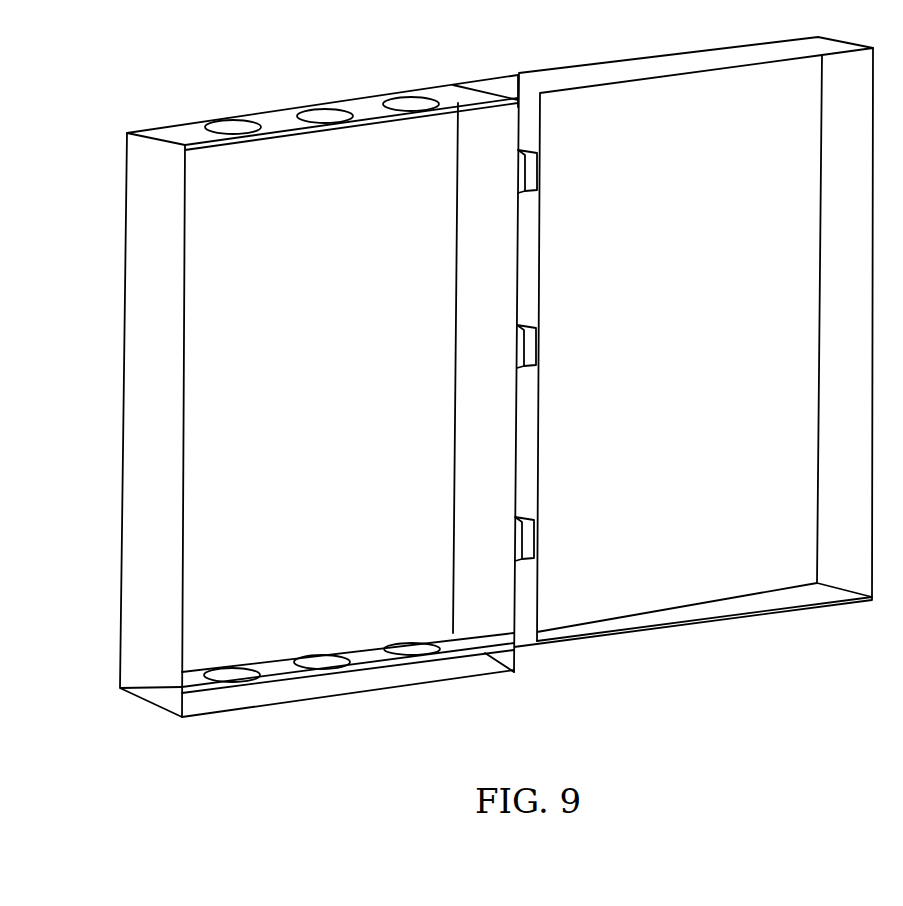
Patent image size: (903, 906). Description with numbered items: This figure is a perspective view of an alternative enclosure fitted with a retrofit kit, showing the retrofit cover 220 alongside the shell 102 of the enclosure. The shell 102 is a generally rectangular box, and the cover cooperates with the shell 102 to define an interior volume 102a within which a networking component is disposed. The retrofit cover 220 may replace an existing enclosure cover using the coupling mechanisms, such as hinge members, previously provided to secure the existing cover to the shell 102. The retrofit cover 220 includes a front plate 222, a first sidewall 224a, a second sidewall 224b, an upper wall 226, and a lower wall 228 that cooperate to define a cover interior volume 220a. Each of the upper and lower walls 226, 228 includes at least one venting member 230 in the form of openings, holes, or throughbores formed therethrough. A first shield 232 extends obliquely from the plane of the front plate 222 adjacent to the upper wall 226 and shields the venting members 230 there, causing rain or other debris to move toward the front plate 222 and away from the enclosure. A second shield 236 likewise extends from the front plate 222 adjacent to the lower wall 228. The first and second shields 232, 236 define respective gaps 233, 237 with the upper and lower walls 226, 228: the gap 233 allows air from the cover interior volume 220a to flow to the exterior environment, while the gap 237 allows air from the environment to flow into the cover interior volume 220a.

The shell 102 is at (680, 62).
The interior volume 102a is at (702, 217).
The retrofit cover 220 is at (123, 340).
The cover interior volume 220a is at (348, 264).
The front plate 222 is at (228, 436).
The first sidewall 224a is at (475, 120).
The second sidewall 224b is at (128, 225).
The upper wall 226 is at (358, 118).
The lower wall 228 is at (372, 662).
The venting member 230 is at (330, 108).
The first shield 232 is at (176, 137).
The gap 233 is at (187, 122).
The second shield 236 is at (358, 678).
The gap 237 is at (210, 688).